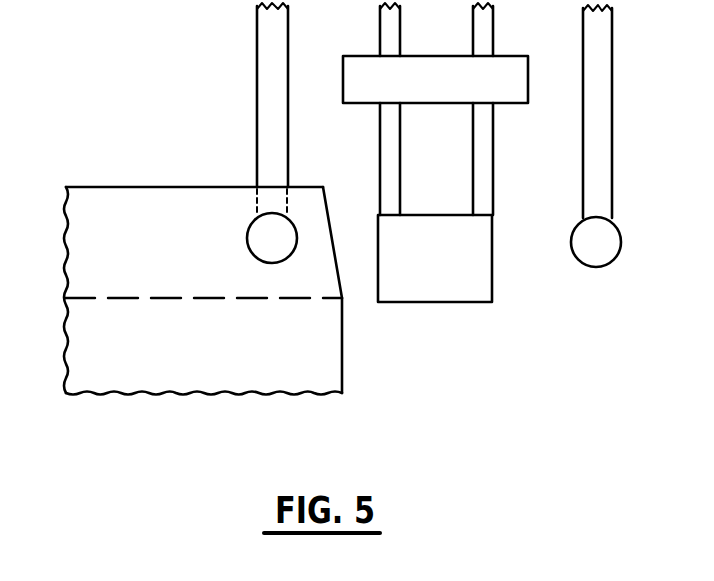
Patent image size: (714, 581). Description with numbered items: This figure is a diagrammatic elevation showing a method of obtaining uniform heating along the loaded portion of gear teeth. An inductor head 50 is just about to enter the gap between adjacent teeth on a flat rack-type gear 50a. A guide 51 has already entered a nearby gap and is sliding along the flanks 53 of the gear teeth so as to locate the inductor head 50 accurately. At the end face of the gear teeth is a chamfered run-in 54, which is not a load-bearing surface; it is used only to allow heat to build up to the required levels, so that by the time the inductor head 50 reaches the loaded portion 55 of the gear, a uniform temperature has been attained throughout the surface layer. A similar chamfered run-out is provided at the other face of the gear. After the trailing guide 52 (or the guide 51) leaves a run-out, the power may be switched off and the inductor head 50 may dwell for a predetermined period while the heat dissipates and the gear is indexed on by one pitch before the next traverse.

The inductor head 50 is at (460, 283).
The flat rack-type gear 50a is at (343, 352).
The guide 51 is at (265, 73).
The trailing guide 52 is at (605, 89).
The flanks 53 is at (250, 213).
The chamfered run-in 54 is at (330, 232).
The loaded portion 55 is at (163, 188).